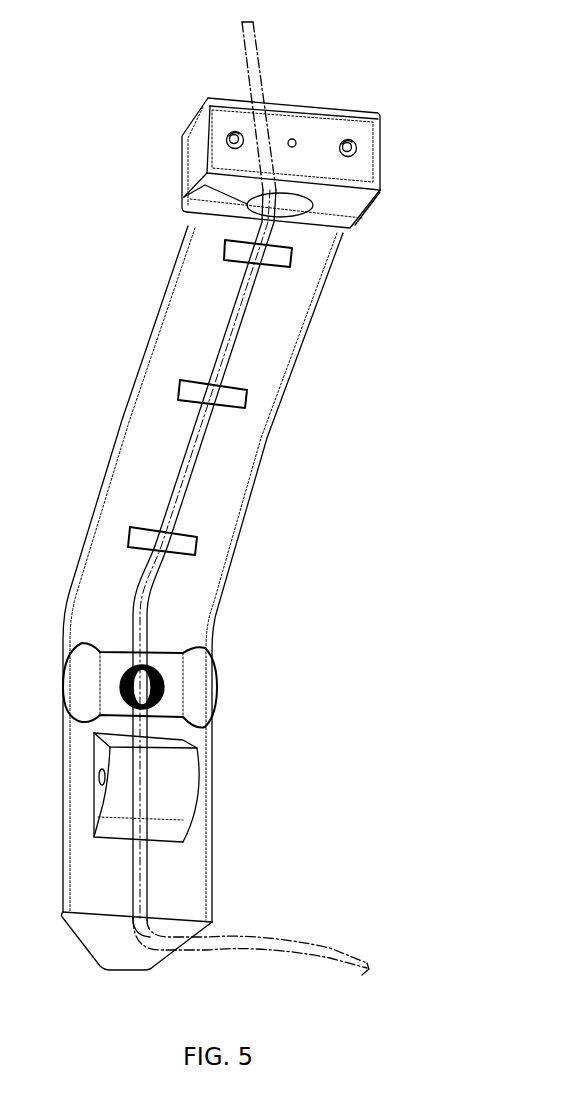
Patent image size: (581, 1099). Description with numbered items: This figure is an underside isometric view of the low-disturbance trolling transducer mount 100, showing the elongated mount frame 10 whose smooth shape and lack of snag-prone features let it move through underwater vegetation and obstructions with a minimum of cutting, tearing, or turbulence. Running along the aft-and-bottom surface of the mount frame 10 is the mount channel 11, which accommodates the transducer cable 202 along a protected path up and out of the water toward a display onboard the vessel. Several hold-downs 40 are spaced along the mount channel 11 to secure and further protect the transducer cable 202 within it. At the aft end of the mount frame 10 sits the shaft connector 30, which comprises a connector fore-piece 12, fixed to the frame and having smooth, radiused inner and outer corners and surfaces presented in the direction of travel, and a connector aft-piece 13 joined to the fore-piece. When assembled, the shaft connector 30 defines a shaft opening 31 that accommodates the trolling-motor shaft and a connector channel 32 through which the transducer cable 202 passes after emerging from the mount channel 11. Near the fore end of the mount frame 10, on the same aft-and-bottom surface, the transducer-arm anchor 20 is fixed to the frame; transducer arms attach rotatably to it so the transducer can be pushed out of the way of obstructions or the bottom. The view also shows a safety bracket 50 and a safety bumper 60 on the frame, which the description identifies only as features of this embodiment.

The low-disturbance trolling transducer mount 100 is at (158, 98).
The mount frame 10 is at (85, 613).
The mount channel 11 is at (237, 340).
The connector fore-piece 12 is at (187, 177).
The connector aft-piece 13 is at (196, 180).
The transducer-arm anchor 20 is at (165, 788).
The shaft connector 30 is at (140, 177).
The shaft opening 31 is at (307, 97).
The connector channel 32 is at (297, 212).
The hold-downs 40 is at (233, 248).
The pad 50 is at (78, 673).
The ring 60 is at (157, 673).
The transducer cable 202 is at (263, 63).